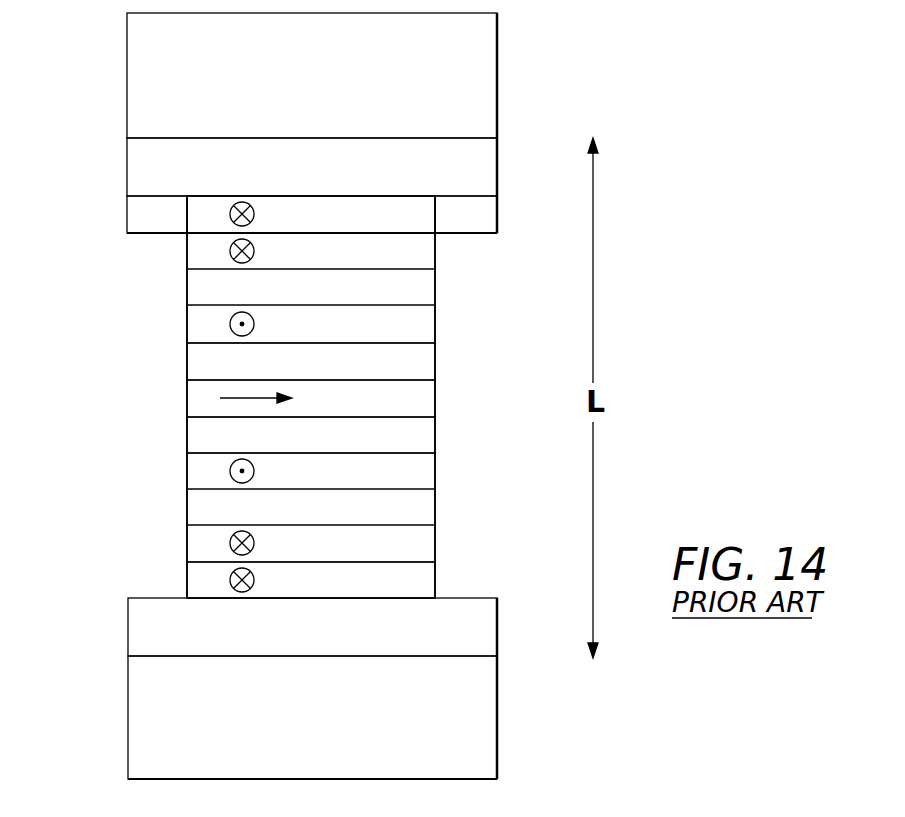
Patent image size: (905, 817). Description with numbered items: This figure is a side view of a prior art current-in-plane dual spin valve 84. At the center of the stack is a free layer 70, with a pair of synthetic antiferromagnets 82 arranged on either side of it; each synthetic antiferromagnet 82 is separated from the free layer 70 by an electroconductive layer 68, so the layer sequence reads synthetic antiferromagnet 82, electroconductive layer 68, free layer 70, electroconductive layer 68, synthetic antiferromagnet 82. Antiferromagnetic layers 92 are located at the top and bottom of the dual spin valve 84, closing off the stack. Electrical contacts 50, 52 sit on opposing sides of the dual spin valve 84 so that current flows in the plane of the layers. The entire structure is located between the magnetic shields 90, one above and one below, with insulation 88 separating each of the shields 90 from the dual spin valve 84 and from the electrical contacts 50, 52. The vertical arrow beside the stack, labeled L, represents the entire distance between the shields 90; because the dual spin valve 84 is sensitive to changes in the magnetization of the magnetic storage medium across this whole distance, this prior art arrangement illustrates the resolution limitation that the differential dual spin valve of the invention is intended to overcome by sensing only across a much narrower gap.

The magnetic shield 90 is at (325, 88).
The insulation 88 is at (325, 178).
The electrical contact 50 is at (169, 229).
The electrical contact 52 is at (476, 229).
The antiferromagnetic layer 92 is at (384, 229).
The electroconductive layer 68 is at (384, 375).
The free layer 70 is at (384, 411).
The synthetic antiferromagnet 82 is at (447, 342).
The dual spin valve 84 is at (122, 397).